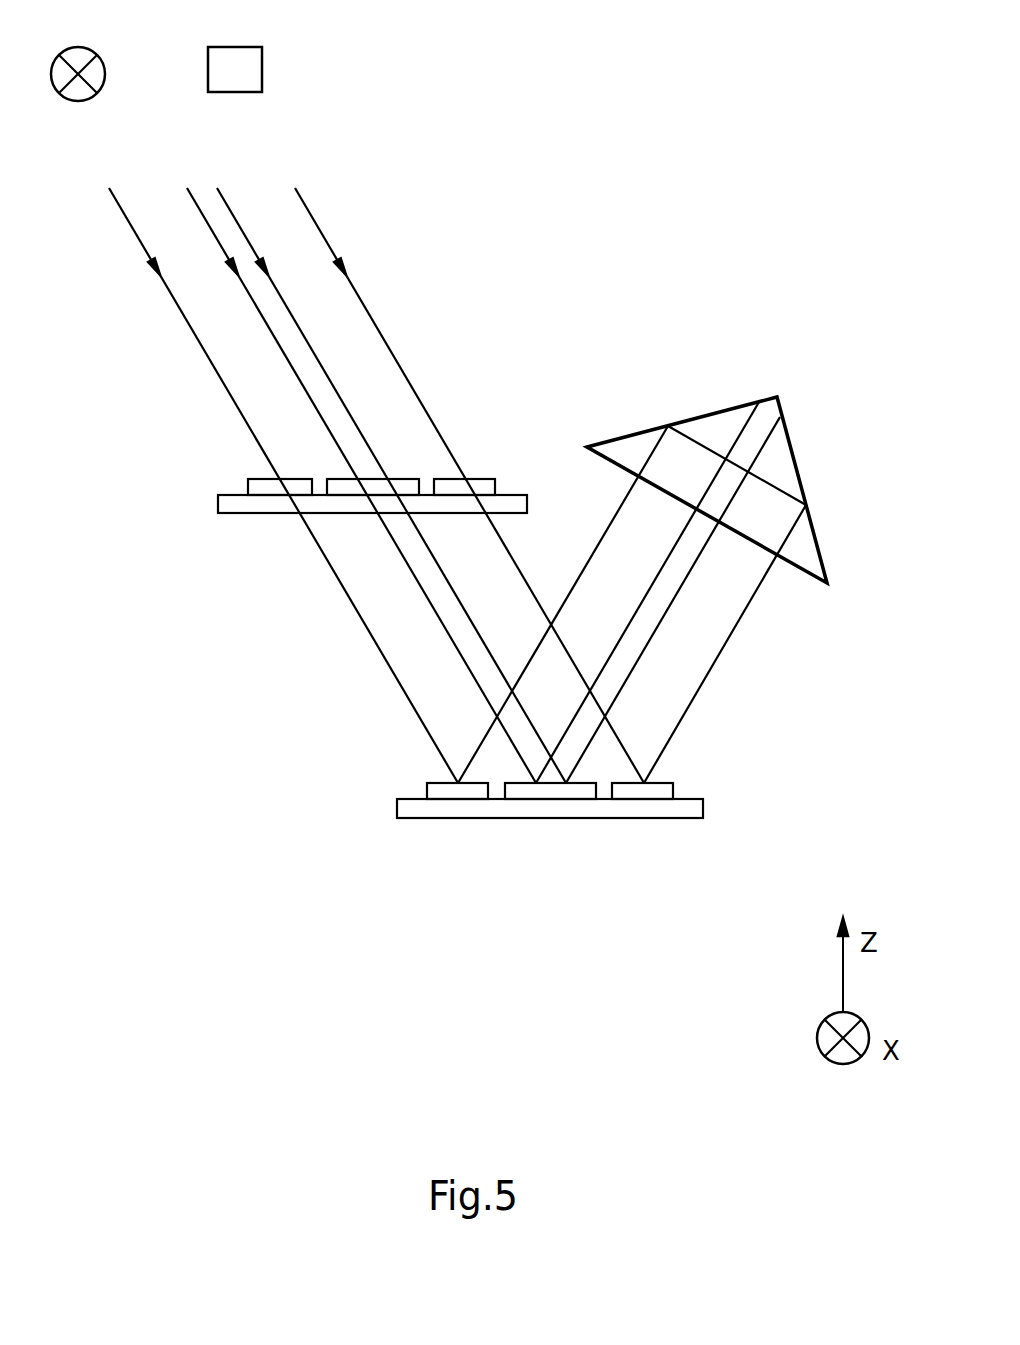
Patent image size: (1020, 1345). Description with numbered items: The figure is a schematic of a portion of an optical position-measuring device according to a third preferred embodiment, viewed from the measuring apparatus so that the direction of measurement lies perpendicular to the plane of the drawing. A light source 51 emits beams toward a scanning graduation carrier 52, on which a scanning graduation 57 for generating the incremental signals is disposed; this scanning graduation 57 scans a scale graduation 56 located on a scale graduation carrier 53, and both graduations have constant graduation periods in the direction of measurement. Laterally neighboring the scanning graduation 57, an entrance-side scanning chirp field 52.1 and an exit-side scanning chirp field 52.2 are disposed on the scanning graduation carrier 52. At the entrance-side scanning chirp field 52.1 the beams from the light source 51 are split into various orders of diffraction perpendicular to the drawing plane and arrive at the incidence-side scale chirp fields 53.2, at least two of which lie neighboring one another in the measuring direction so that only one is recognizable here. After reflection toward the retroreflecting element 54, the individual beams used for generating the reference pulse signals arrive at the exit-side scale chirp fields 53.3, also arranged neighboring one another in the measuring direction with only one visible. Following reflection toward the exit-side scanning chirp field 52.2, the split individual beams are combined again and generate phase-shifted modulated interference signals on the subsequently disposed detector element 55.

The light source 51 is at (89, 52).
The detector element 55 is at (247, 50).
The scanning graduation carrier 52 is at (242, 512).
The entrance-side scanning chirp field 52.1 is at (258, 479).
The exit-side scanning chirp field 52.2 is at (485, 478).
The scanning graduation 57 is at (402, 478).
The retroreflecting element 54 is at (813, 553).
The scale graduation carrier 53 is at (457, 812).
The incidence-side scale chirp field 53.2 is at (436, 786).
The exit-side scale chirp field 53.3 is at (667, 785).
The scale graduation 56 is at (557, 792).